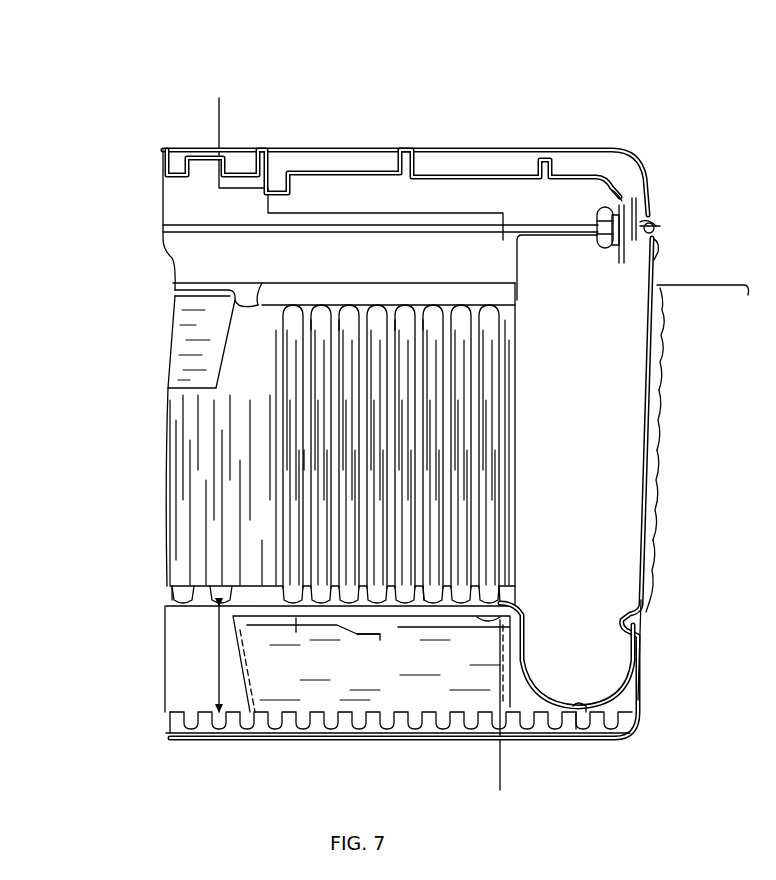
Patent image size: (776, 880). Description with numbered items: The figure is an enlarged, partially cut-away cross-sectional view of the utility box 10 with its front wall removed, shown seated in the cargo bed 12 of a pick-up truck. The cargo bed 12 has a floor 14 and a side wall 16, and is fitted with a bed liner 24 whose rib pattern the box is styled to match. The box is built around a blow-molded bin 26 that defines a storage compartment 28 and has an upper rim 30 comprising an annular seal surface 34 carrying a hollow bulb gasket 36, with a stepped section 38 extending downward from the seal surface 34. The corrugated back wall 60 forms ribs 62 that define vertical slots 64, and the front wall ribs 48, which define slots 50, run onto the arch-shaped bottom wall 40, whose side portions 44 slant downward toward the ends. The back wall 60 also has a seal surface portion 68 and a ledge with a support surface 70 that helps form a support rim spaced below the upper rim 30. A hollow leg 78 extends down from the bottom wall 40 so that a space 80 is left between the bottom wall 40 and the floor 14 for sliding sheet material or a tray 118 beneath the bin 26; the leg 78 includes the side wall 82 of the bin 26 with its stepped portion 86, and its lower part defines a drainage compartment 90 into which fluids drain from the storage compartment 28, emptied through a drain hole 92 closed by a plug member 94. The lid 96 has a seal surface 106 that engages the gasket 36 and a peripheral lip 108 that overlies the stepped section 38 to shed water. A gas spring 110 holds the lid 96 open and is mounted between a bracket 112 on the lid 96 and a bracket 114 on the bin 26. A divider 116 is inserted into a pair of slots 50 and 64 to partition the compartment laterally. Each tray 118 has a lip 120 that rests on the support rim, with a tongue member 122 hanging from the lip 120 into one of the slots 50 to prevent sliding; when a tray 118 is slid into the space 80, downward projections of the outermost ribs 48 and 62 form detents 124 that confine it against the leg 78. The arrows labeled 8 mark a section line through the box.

The section line 8- 8 is at (219, 98).
The utility box 10 is at (382, 108).
The cargo bed 12 is at (666, 504).
The floor 14 is at (190, 708).
The side wall 16 is at (668, 372).
The bed liner 24 is at (205, 730).
The bin 26 is at (204, 612).
The storage compartment 28 is at (190, 246).
The upper rim 30 is at (639, 650).
The seal surface 34 is at (648, 222).
The sealing gasket 36 is at (632, 222).
The stepped section 38 is at (660, 248).
The bottom wall 40 is at (200, 600).
The side portions 44 is at (212, 608).
The ribs 48 is at (497, 600).
The vertical slots 50 is at (445, 592).
The back wall 60 is at (283, 543).
The ribs 62 is at (350, 313).
The vertical slots 64 is at (447, 304).
The seal surface portion 68 is at (211, 232).
The support surface 70 is at (262, 304).
The legs 78 is at (652, 561).
The space 80 is at (246, 632).
The side wall 82 is at (662, 410).
The stepped portion 86 is at (648, 270).
The drainage compartment 90 is at (530, 665).
The drain hole 92 is at (583, 730).
The plug member 94 is at (583, 705).
The lid 96 is at (488, 140).
The seal surface 106 is at (611, 245).
The peripheral lip 108 is at (657, 230).
The gas spring 110 is at (596, 226).
The bracket 112 is at (610, 200).
The bracket 114 is at (620, 265).
The divider 116 is at (305, 455).
The tray 118 is at (190, 312).
The lip 120 is at (226, 320).
The tongue member 122 is at (383, 636).
The detents 124 is at (462, 620).